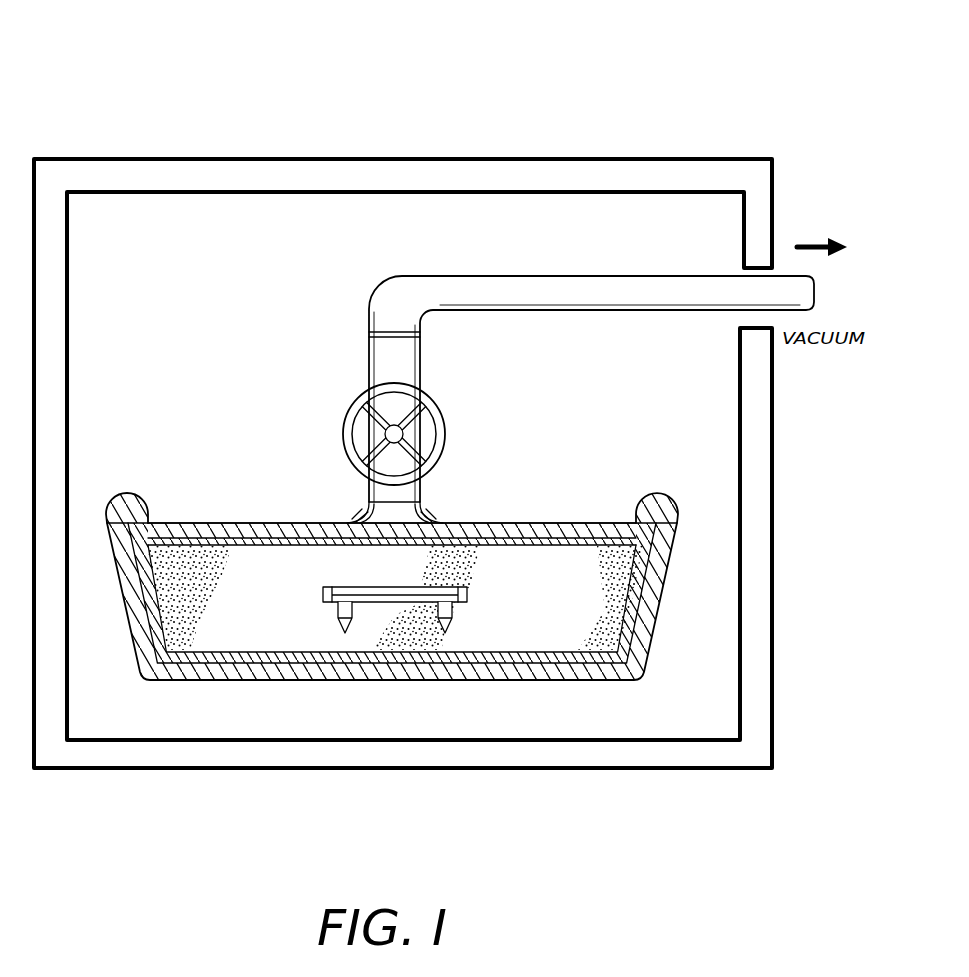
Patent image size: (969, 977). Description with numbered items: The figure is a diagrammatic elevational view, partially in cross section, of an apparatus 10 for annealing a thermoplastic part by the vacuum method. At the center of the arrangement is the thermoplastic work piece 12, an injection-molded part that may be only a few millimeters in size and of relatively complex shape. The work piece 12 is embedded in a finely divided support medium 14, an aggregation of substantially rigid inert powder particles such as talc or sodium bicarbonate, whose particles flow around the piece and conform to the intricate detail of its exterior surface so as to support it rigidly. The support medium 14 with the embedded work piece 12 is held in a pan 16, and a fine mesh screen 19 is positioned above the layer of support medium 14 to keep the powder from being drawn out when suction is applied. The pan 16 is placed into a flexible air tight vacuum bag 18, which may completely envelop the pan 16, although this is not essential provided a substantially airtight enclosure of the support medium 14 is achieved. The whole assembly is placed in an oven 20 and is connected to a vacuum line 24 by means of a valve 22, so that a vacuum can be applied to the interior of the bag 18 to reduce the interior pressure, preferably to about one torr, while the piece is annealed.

The apparatus 10 is at (212, 90).
The thermoplastic work piece 12 is at (322, 594).
The support medium 14 is at (205, 580).
The pan 16 is at (260, 652).
The vacuum bag 18 is at (573, 524).
The fine mesh screen 19 is at (420, 508).
The oven 20 is at (593, 166).
The valve 22 is at (438, 423).
The vacuum line 24 is at (645, 284).